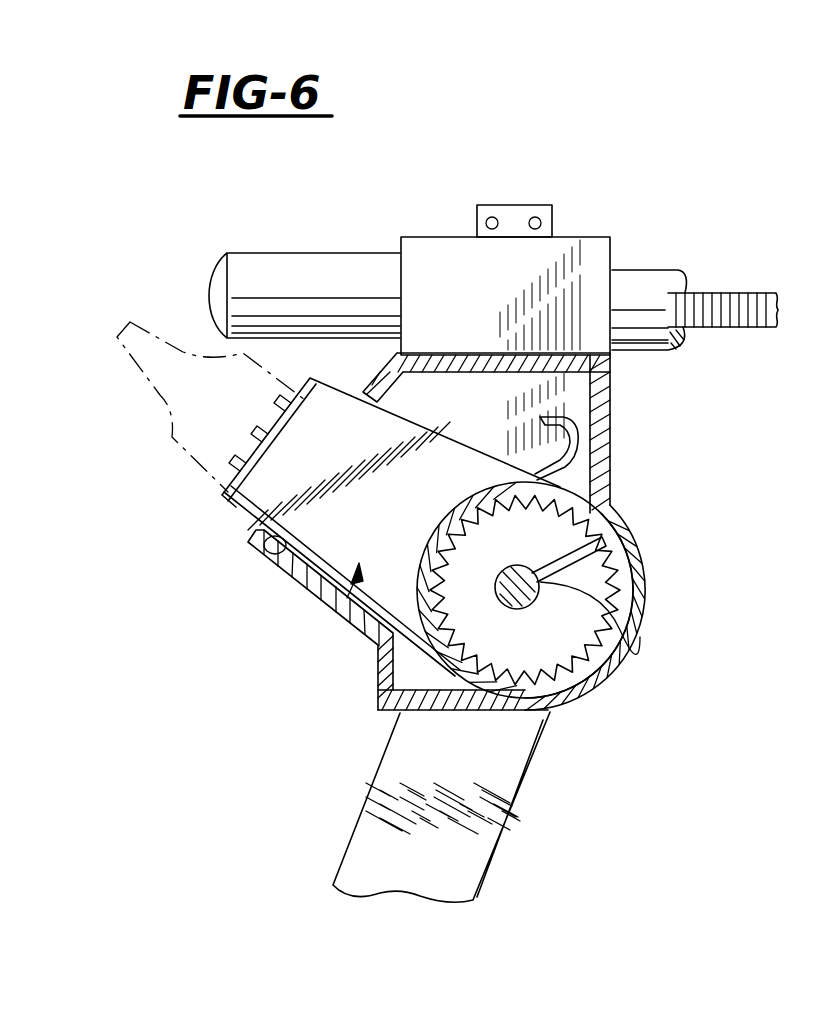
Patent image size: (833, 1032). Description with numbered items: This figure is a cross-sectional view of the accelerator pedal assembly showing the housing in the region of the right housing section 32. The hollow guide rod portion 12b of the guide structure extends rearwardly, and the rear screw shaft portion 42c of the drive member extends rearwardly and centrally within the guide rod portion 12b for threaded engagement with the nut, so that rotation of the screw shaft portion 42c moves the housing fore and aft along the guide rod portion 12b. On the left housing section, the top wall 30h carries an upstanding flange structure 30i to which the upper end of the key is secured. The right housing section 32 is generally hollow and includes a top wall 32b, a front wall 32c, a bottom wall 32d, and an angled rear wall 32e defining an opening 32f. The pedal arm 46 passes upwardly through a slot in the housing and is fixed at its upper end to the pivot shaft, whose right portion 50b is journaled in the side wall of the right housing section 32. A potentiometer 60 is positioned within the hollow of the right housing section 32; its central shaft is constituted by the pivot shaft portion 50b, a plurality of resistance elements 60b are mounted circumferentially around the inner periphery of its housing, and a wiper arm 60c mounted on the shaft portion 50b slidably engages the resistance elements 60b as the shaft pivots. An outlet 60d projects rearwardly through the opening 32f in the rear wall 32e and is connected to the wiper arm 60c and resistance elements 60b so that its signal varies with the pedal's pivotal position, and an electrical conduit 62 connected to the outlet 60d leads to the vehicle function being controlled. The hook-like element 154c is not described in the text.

The guide rod portion 12b is at (318, 270).
The flange structure 30i is at (520, 208).
The top wall 30h is at (592, 240).
The rear screw shaft portion 42c is at (732, 300).
The top wall 32b is at (468, 352).
The right housing section 32 is at (640, 486).
The front wall 32c is at (630, 653).
The bottom wall 32d is at (513, 713).
The angled rear wall 32e is at (378, 645).
The opening 32f is at (275, 563).
The hook 154c is at (572, 445).
The potentiometer 60 is at (328, 613).
The resistance elements 60b is at (572, 518).
The wiper arm 60c is at (610, 578).
The outlet 60d is at (225, 505).
The electrical conduit 62 is at (160, 397).
The right portion of pivot shaft 50b is at (643, 636).
The pedal arm 46 is at (370, 828).